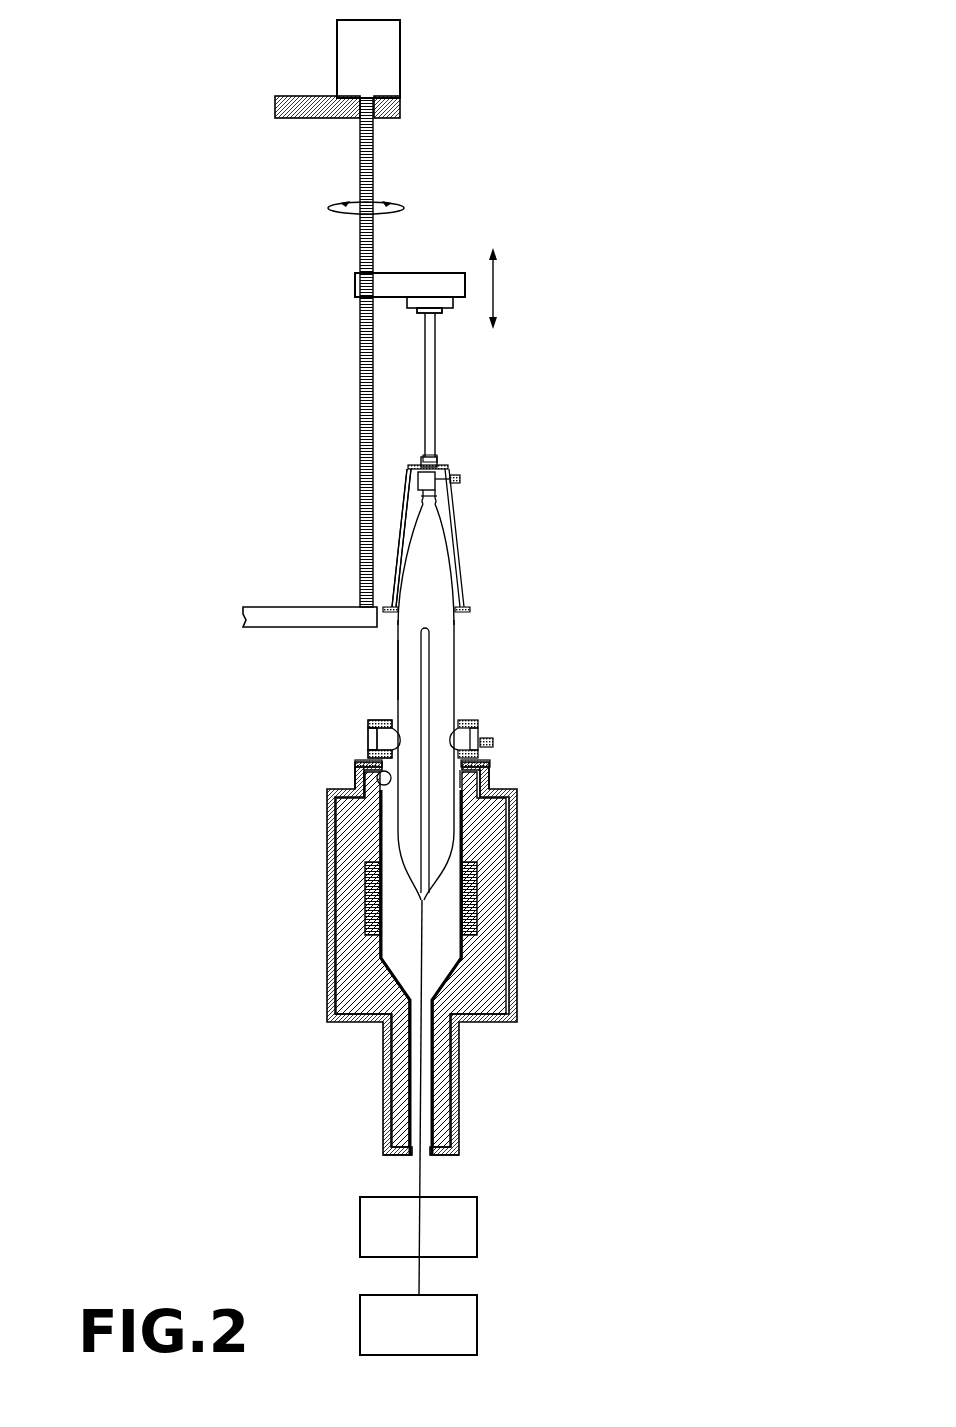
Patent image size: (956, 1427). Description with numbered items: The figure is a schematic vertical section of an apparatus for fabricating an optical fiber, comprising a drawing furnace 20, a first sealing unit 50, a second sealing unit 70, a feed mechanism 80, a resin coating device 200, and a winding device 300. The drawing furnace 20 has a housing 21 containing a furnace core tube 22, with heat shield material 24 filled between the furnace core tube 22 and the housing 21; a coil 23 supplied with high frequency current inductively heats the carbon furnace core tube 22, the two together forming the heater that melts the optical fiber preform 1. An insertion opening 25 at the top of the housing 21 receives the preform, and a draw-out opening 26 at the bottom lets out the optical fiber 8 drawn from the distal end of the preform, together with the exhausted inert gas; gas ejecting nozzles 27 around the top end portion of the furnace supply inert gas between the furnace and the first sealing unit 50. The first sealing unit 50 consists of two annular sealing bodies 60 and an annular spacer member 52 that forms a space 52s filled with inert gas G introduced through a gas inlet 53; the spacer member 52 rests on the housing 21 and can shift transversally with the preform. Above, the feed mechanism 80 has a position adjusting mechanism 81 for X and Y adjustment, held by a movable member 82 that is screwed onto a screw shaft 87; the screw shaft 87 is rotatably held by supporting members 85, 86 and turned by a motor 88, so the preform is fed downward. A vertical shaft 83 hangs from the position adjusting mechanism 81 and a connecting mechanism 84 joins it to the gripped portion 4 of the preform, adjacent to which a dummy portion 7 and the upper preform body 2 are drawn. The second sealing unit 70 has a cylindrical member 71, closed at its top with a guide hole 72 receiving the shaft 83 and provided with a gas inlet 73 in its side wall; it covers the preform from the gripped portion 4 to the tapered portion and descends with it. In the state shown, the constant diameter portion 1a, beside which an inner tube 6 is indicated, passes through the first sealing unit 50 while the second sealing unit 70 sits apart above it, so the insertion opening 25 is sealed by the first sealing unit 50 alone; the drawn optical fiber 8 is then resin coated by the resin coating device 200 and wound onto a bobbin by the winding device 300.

The motor 88 is at (400, 58).
The supporting member 85 is at (400, 106).
The screw shaft 87 is at (373, 240).
The movable member 82 is at (370, 291).
The feed mechanism 80 is at (428, 270).
The shaft 83 is at (435, 378).
The position adjusting mechanism 81 is at (417, 313).
The connecting mechanism 84 is at (423, 455).
The guide hole 72 is at (427, 447).
The second sealing unit 70 is at (468, 583).
The cylindrical member 71 is at (396, 520).
The gas inlet 73 is at (456, 488).
The inert gas G is at (466, 478).
The dummy rod 7 is at (436, 503).
The gripped portion 4 is at (440, 505).
The preform upper portion 2 is at (441, 573).
The supporting member 86 is at (270, 607).
The optical fiber preform 1 is at (460, 664).
The constant diameter portion 1a is at (399, 650).
The inner tube 6 is at (431, 633).
The optical fiber 8 is at (420, 1177).
The first sealing unit 50 is at (485, 712).
The gas inlet 53 is at (481, 734).
The annular sealing body 60 is at (372, 722).
The annular spacer member 52 is at (369, 746).
The space 52s is at (496, 767).
The gas ejecting nozzle 27 is at (354, 764).
The insertion opening 25 is at (355, 768).
The drawing furnace 20 is at (478, 958).
The housing 21 is at (518, 915).
The heat shield material 24 is at (498, 841).
The furnace core tube 22 is at (505, 997).
The coil 23 is at (478, 879).
The draw-out opening 26 is at (418, 1157).
The resin coating device 200 is at (477, 1222).
The winding device 300 is at (477, 1322).